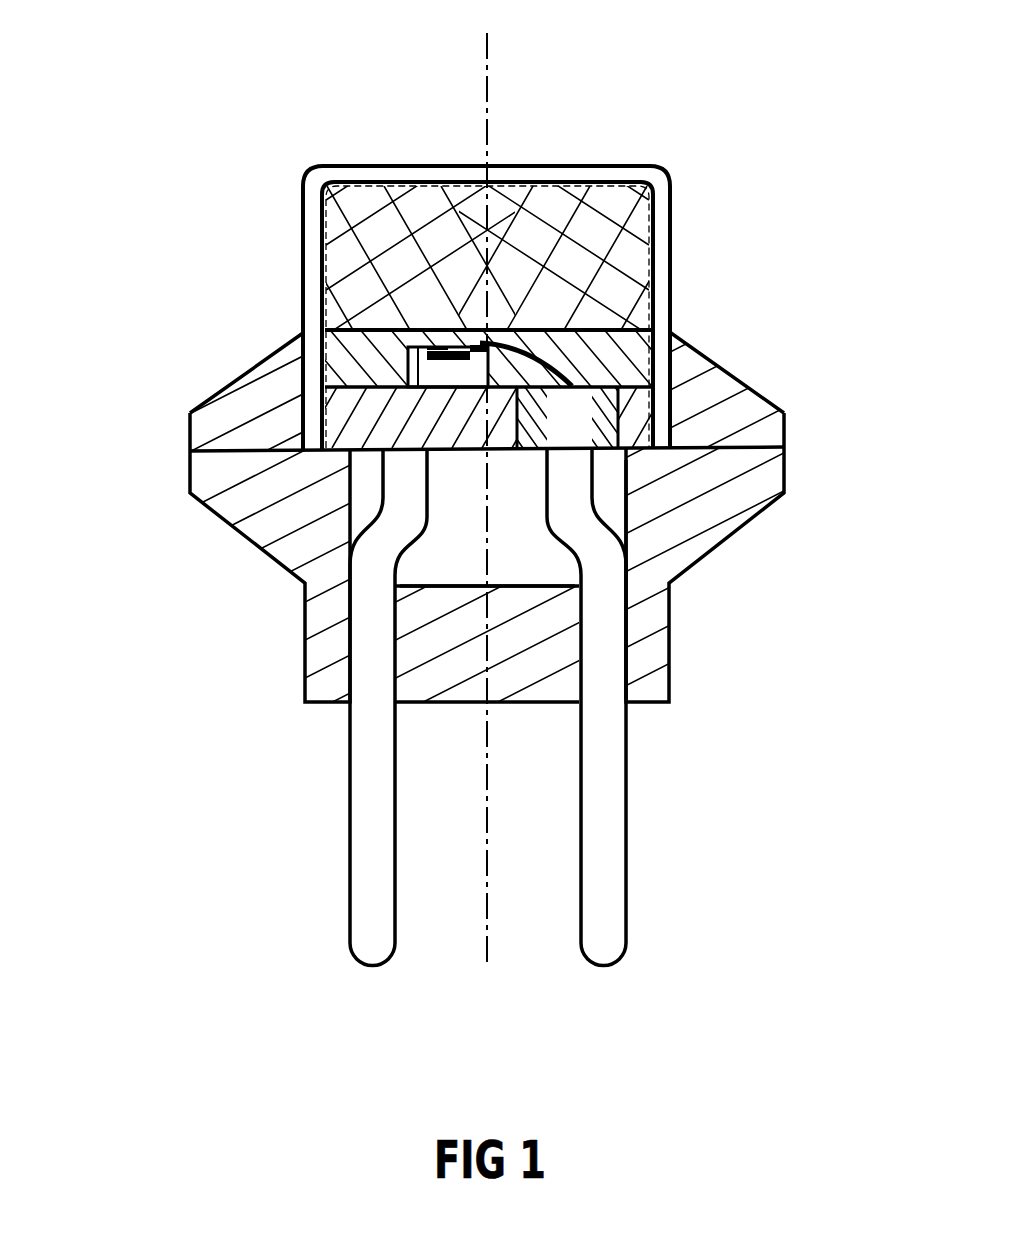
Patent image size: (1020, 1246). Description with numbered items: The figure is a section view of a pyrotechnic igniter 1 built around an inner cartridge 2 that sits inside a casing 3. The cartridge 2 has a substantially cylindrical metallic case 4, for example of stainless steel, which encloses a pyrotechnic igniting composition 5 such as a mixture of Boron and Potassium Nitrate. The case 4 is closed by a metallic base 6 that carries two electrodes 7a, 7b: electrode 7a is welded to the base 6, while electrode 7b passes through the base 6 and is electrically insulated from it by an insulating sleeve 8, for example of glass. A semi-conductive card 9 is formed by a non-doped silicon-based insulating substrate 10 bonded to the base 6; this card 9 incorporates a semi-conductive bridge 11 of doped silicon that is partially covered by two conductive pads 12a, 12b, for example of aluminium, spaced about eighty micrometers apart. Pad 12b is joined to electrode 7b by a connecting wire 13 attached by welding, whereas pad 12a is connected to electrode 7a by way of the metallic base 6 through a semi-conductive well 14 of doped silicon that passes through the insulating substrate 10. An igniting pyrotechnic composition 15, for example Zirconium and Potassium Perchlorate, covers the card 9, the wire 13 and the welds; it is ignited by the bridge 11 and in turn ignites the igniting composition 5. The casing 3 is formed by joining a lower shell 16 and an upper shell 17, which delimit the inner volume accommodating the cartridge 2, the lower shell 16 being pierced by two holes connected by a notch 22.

The pyrotechnic igniter 1 is at (272, 735).
The inner cartridge 2 is at (668, 240).
The casing 3 is at (235, 355).
The metallic case 4 is at (313, 226).
The pyrotechnic igniting composition 5 is at (575, 245).
The base 6 is at (360, 426).
The electrode 7a is at (378, 900).
The electrode 7b is at (597, 793).
The insulating sleeve 8 is at (600, 426).
The semi-conductive card 9 is at (445, 345).
The insulating substrate 10 is at (442, 377).
The semi-conductive bridge 11 is at (458, 340).
The conductive pad 12a is at (450, 336).
The conductive pad 12b is at (478, 340).
The connecting wire 13 is at (640, 338).
The semi-conductive well 14 is at (340, 408).
The igniting pyrotechnic composition 15 is at (602, 362).
The lower shell 16 is at (680, 523).
The upper shell 17 is at (667, 178).
The notch 22 is at (512, 550).